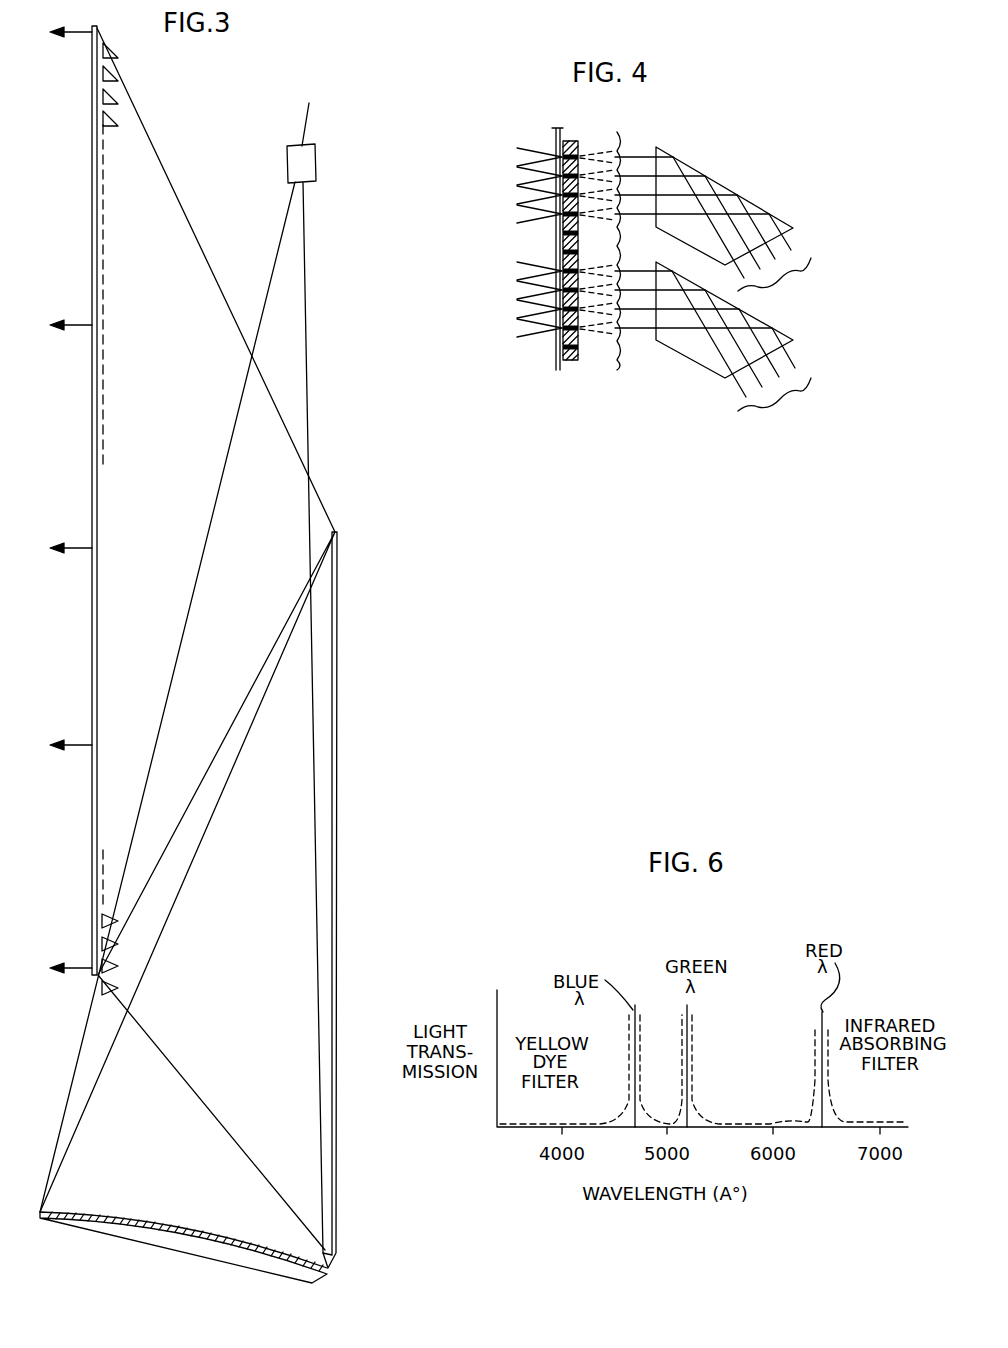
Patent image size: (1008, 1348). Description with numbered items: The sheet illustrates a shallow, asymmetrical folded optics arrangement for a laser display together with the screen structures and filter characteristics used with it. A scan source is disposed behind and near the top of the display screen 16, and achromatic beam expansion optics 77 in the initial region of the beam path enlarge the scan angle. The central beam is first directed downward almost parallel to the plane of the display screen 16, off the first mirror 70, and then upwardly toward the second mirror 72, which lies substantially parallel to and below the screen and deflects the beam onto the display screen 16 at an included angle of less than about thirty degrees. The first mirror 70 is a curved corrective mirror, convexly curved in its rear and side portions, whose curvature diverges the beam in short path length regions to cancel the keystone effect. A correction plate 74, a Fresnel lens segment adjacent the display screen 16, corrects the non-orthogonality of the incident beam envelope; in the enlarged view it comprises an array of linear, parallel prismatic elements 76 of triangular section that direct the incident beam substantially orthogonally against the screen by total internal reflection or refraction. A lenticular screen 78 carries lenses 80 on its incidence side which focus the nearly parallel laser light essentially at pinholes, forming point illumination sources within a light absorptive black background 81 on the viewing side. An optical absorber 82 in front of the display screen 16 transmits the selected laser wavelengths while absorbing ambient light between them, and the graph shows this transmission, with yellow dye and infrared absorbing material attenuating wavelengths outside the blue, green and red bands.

In FIG. 3, the display screen 16 is at (92, 640).
In FIG. 4, the display screen 16 is at (575, 388).
In FIG. 3, the first mirror 70 is at (222, 1256).
In FIG. 3, the second mirror 72 is at (337, 832).
In FIG. 3, the correction plate 74 is at (110, 186).
In FIG. 3, the prismatic elements 76 is at (119, 50).
In FIG. 4, the prismatic elements 76 is at (696, 162).
In FIG. 3, the achromatic beam expansion optics 77 is at (287, 160).
In FIG. 4, the lenticular screen 78 is at (598, 150).
In FIG. 4, the lenses 80 is at (618, 146).
In FIG. 4, the light absorptive black background 81 is at (562, 157).
In FIG. 4, the optical absorber 82 is at (560, 367).